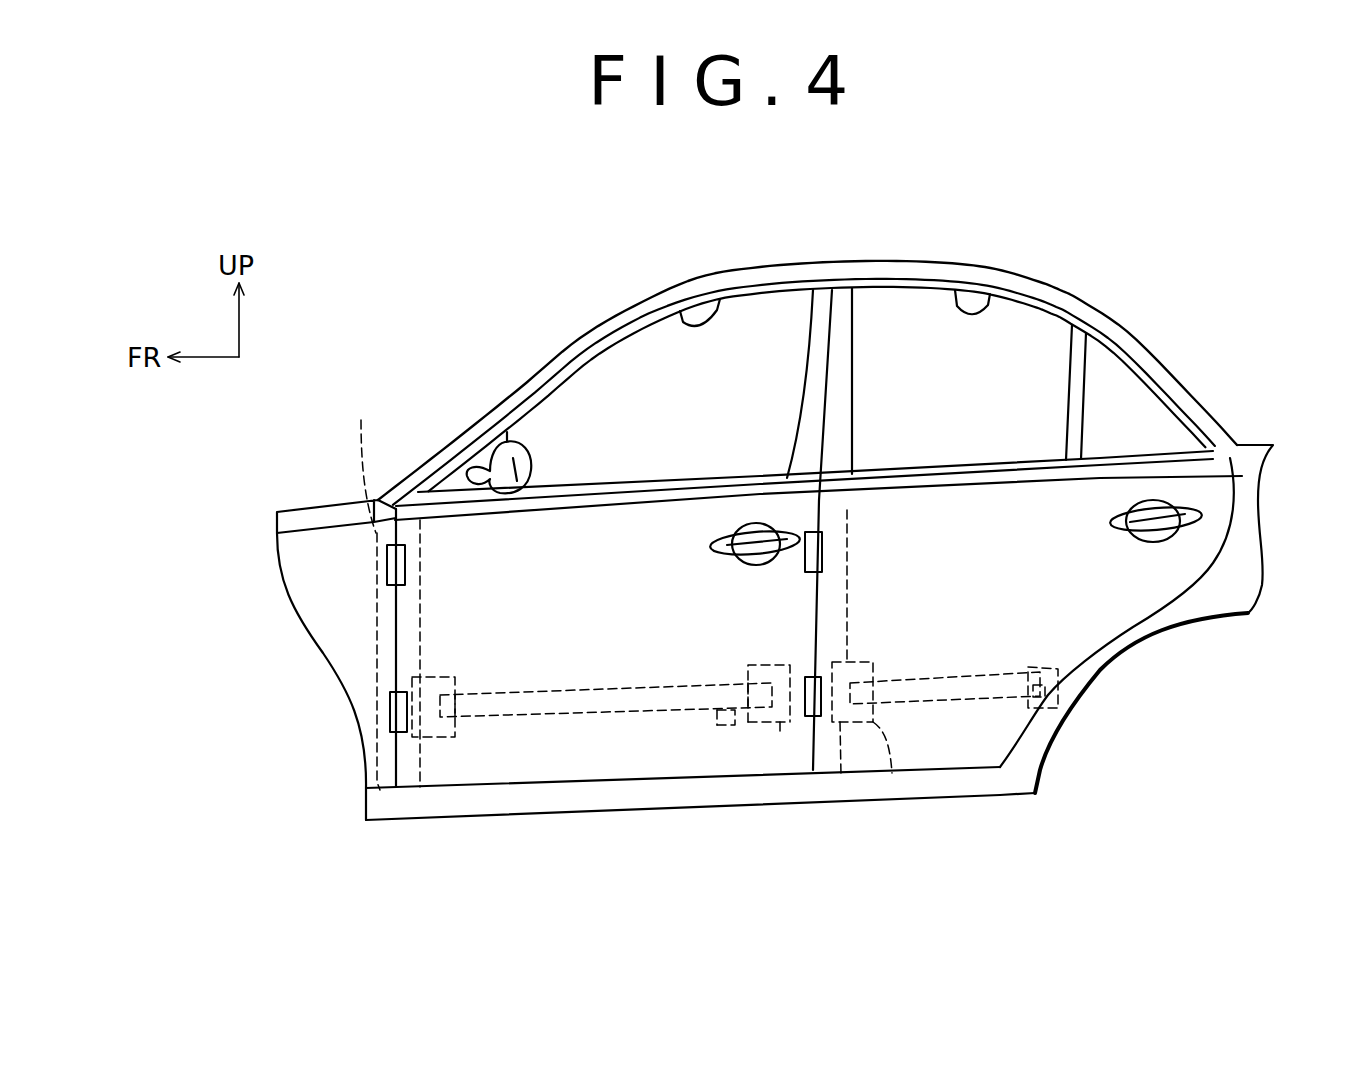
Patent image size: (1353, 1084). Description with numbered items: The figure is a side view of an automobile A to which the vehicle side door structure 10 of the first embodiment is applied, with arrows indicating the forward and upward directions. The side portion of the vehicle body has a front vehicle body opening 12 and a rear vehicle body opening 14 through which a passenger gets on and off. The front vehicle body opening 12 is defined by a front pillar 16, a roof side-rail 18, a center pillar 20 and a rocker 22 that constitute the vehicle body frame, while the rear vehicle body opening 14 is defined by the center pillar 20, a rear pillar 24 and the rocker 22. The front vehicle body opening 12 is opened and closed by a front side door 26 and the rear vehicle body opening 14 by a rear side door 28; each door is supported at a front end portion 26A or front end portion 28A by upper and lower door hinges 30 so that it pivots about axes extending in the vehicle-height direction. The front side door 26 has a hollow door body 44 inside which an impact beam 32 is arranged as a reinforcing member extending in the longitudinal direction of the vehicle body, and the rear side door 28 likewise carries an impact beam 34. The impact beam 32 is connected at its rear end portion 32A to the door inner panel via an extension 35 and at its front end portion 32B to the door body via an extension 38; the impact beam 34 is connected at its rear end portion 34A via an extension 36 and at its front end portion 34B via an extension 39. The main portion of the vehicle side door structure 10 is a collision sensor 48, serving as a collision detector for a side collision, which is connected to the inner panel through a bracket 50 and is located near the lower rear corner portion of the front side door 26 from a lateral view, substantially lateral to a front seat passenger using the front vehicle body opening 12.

The automobile A is at (1117, 247).
The vehicle side door structure 10 is at (430, 638).
The front vehicle body opening 12 is at (680, 302).
The rear vehicle body opening 14 is at (990, 294).
The front pillar 16 is at (440, 462).
The roof side-rail 18 is at (828, 279).
The center pillar 20 is at (853, 512).
The rocker 22 is at (768, 785).
The rear pillar 24 is at (1175, 386).
The front side door 26 is at (610, 753).
The door body 44 is at (703, 696).
The front end portion 26A is at (408, 652).
The rear side door 28 is at (977, 740).
The front end portion 28A is at (830, 628).
The door hinge 30 is at (405, 558).
The impact beam 32 is at (658, 693).
The rear end portion 32A is at (760, 696).
The front end portion 32B is at (520, 688).
The impact beam 34 is at (985, 681).
The rear end portion 34A is at (1043, 713).
The front end portion 34B is at (1033, 797).
The extension 35 is at (758, 724).
The extension 36 is at (1065, 688).
The extension 38 is at (455, 737).
The extension 39 is at (893, 778).
The collision sensor 48 is at (722, 728).
The bracket 50 is at (717, 720).